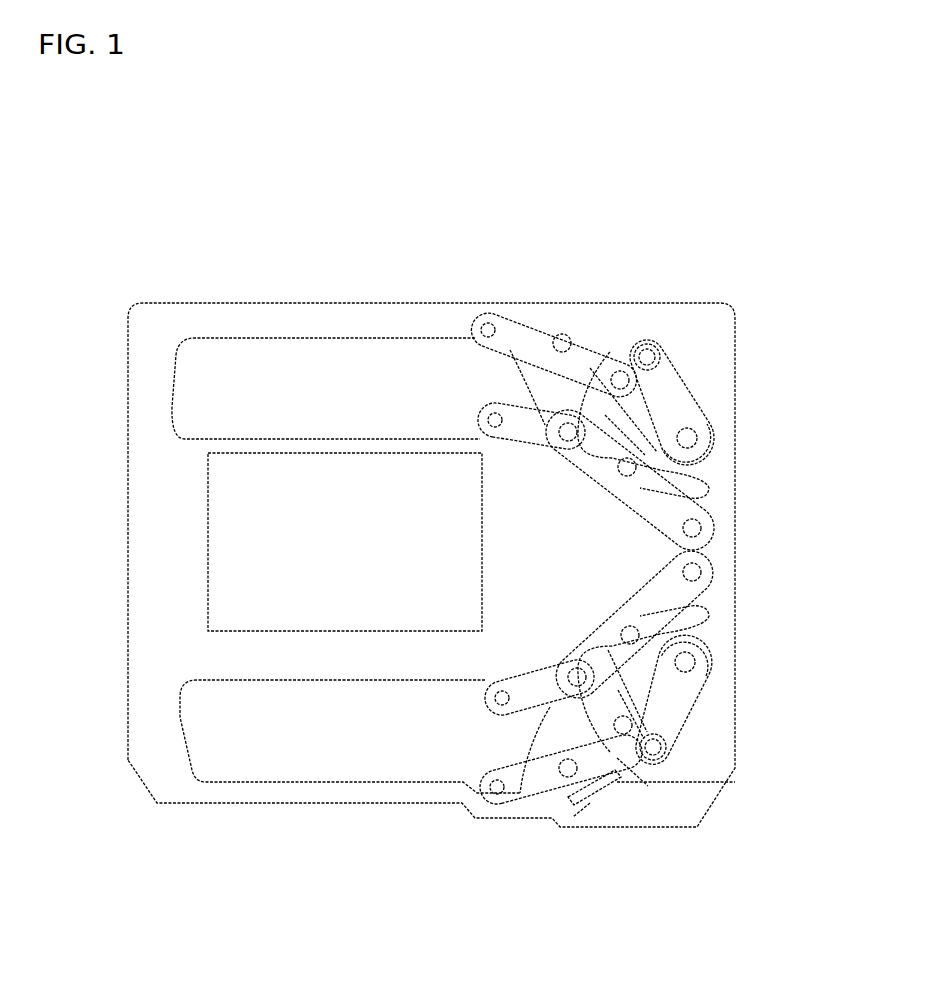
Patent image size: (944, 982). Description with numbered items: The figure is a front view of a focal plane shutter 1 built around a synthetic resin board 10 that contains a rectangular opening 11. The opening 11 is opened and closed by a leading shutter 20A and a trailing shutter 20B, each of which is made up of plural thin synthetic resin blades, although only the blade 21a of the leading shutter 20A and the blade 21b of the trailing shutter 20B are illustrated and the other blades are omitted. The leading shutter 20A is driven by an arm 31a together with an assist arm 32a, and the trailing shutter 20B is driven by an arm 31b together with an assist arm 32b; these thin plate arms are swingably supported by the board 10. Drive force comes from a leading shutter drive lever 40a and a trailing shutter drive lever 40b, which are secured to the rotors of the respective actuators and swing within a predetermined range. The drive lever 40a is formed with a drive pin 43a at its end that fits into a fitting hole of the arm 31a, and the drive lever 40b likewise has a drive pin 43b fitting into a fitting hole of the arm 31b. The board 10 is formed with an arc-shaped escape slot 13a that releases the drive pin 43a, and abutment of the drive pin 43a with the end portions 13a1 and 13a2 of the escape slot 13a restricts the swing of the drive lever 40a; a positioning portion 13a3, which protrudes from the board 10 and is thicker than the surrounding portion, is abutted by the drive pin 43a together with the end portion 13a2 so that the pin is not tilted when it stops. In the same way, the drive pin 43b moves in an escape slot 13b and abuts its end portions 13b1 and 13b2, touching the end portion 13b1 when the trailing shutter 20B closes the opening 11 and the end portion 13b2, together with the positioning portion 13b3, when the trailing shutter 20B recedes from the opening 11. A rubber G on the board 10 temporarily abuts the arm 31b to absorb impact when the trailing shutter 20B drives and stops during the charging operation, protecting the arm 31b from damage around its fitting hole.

The focal plane shutter 1 is at (697, 258).
The board 10 is at (740, 313).
The opening 11 is at (332, 453).
The leading shutter 20A is at (345, 336).
The trailing shutter 20B is at (307, 784).
The blade 21a is at (267, 357).
The blade 21b is at (395, 748).
The arm 31a is at (520, 325).
The arm 31b is at (526, 806).
The assist arm 32a is at (705, 496).
The assist arm 32b is at (705, 584).
The leading shutter drive lever 40a is at (686, 412).
The trailing shutter drive lever 40b is at (681, 683).
The drive pin 43a is at (640, 338).
The drive pin 43b is at (668, 724).
The escape slot 13a is at (618, 370).
The escape slot 13b is at (625, 785).
The end portion 13a1 is at (662, 358).
The end portion 13a2 is at (640, 466).
The positioning portion 13a3 is at (703, 526).
The end portion 13b1 is at (642, 634).
The end portion 13b2 is at (632, 780).
The positioning portion 13b3 is at (667, 750).
The rubber G is at (590, 812).